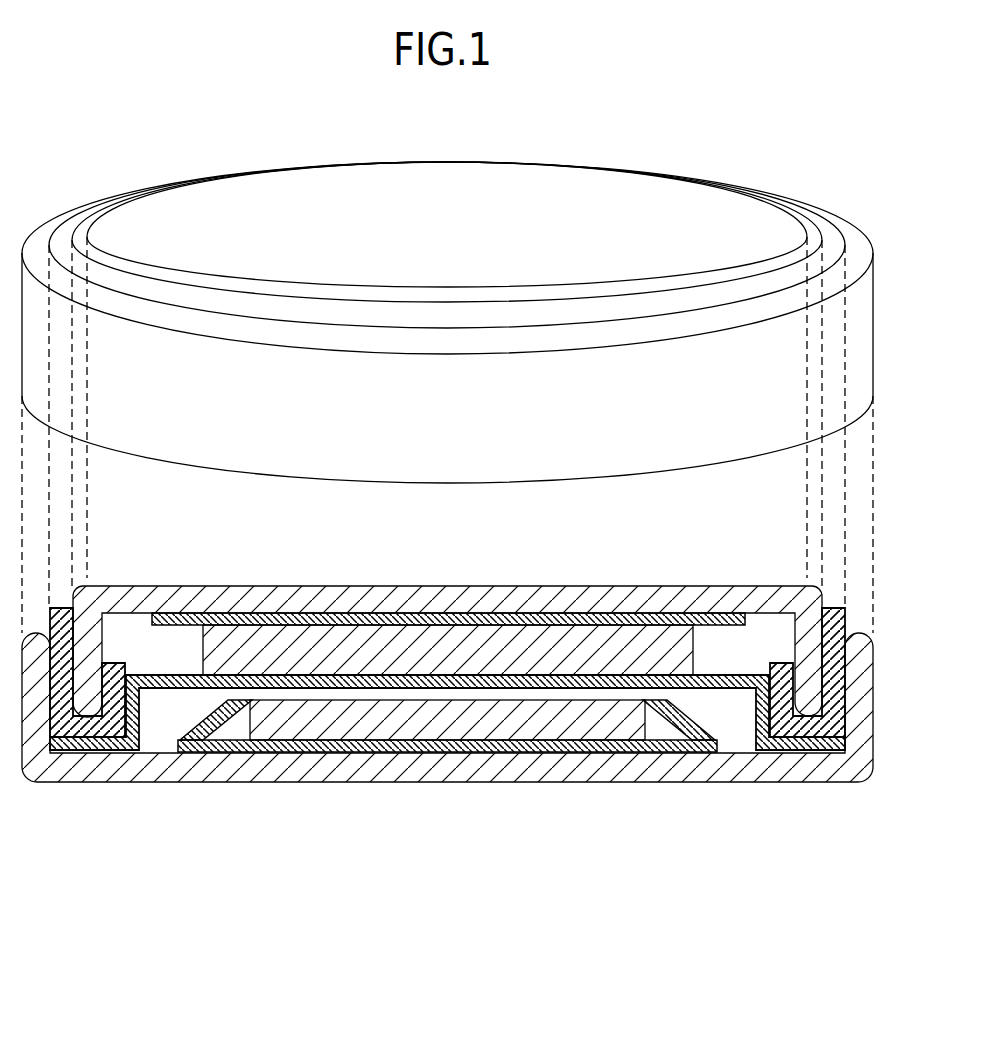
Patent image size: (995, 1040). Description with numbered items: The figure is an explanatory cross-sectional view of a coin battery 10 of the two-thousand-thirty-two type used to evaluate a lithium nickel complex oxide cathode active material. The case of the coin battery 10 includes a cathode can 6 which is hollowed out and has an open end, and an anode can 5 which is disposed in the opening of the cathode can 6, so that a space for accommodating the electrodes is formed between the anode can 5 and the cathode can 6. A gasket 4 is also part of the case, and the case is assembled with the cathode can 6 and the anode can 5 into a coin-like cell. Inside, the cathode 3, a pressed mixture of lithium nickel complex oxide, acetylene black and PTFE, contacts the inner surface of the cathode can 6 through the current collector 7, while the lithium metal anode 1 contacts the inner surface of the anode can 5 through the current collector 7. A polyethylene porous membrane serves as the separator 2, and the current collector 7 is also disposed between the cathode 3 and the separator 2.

The coin battery 10 is at (78, 149).
The anode 1 is at (386, 643).
The separator 2 is at (742, 682).
The cathode 3 is at (452, 722).
The gasket 4 is at (88, 732).
The anode can 5 is at (573, 593).
The cathode can 6 is at (673, 770).
The current collector 7 is at (160, 620).